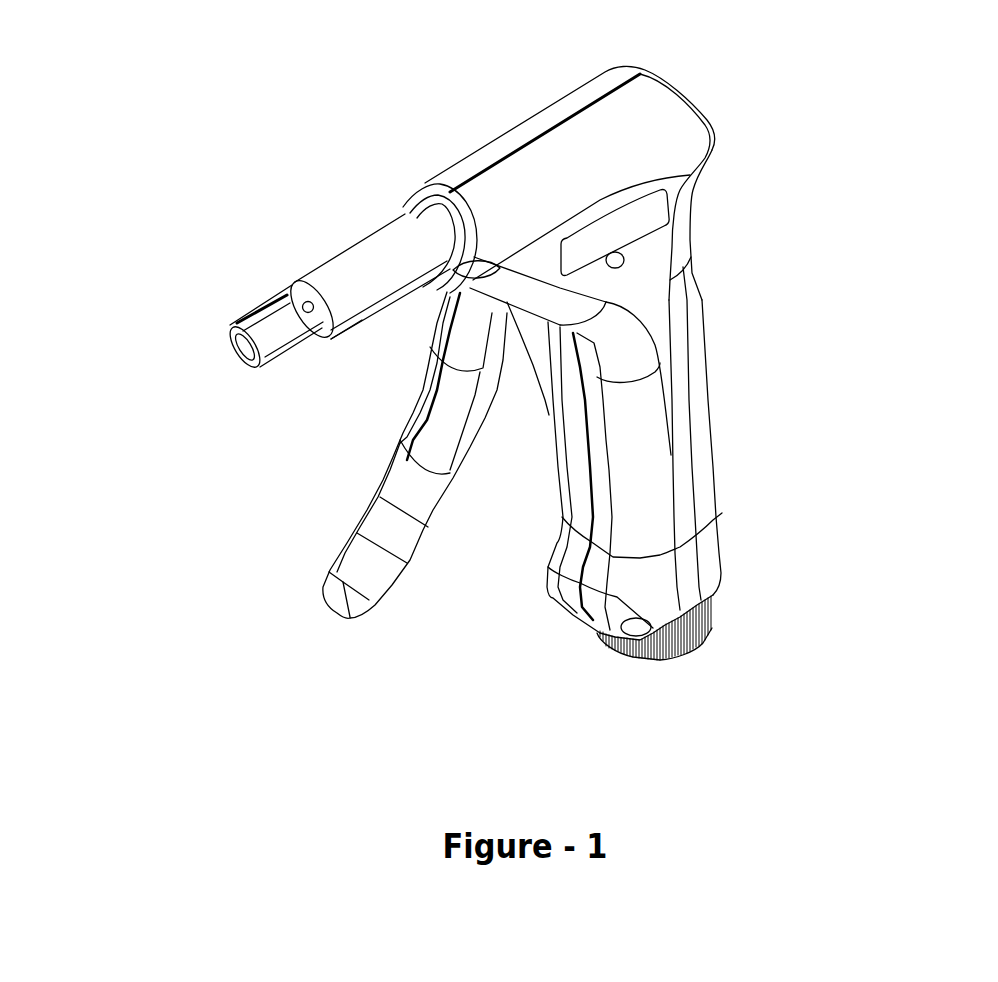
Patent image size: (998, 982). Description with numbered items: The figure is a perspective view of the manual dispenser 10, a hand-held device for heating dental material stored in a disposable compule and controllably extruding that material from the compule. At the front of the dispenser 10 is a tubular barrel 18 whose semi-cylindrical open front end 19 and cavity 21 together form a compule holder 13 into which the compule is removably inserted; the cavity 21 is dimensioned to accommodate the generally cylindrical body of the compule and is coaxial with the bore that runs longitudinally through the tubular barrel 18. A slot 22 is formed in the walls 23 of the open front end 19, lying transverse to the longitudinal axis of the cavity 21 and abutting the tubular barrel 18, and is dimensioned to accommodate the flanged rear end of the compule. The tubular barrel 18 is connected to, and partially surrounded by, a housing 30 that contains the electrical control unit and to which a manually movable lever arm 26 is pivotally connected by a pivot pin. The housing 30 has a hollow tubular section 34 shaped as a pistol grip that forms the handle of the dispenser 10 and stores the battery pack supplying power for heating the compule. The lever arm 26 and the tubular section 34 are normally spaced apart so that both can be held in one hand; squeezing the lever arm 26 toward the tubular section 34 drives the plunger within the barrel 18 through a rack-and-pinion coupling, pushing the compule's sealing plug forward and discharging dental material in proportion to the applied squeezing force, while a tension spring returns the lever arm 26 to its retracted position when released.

The manual dispenser 10 is at (717, 378).
The compule holder 13 is at (273, 362).
The tubular barrel 18 is at (361, 256).
The open front end 19 is at (230, 359).
The cavity 21 is at (261, 312).
The slot 22 is at (298, 302).
The walls 23 is at (341, 337).
The manually movable lever arm 26 is at (408, 540).
The housing 30 is at (650, 117).
The hollow tubular section 34 is at (720, 522).